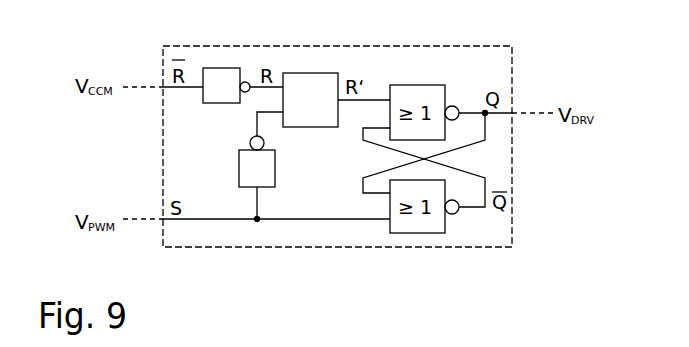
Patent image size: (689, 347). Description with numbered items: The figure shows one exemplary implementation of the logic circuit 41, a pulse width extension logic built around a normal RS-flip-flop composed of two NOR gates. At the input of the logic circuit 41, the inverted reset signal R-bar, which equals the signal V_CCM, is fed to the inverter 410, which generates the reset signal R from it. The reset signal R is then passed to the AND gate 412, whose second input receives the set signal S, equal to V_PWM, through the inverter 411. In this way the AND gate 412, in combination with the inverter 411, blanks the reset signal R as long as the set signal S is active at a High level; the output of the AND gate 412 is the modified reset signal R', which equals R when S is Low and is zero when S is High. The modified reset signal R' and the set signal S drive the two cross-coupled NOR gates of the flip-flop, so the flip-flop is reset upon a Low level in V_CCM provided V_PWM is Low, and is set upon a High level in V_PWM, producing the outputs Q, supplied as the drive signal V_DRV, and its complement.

The logic circuit 41 is at (337, 133).
The inverter 410 is at (205, 104).
The inverter 411 is at (239, 173).
The AND gate 412 is at (310, 128).